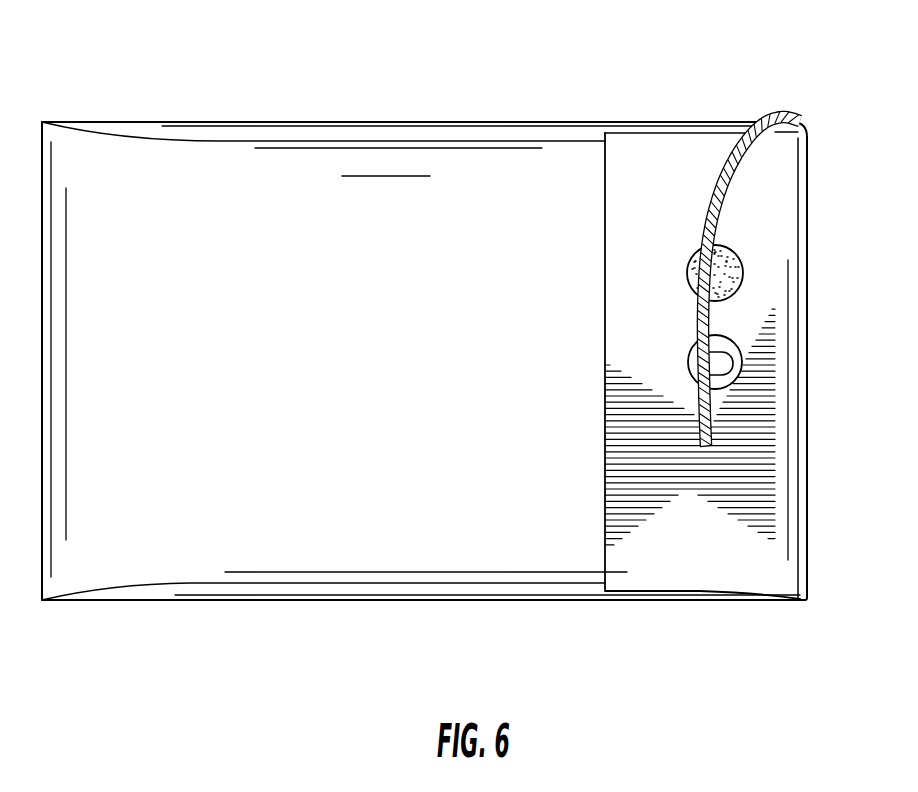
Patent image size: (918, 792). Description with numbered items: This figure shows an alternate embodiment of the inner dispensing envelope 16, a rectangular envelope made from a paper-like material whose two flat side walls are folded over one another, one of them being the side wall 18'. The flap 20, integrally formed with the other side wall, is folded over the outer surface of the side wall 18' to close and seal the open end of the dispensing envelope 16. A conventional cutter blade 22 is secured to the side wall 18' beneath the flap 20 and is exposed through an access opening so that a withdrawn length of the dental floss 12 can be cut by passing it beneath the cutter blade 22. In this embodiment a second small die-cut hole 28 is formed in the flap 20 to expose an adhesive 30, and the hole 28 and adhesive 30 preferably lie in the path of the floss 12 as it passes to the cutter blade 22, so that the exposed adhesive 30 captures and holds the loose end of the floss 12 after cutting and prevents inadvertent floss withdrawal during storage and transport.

The inner dispensing envelope 16 is at (378, 58).
The side wall 18' is at (181, 196).
The dental floss 12 is at (773, 114).
The adhesive 30 is at (717, 272).
The second die-cut hole 28 is at (731, 291).
The cutter blade 22 is at (710, 367).
The flap 20 is at (671, 570).